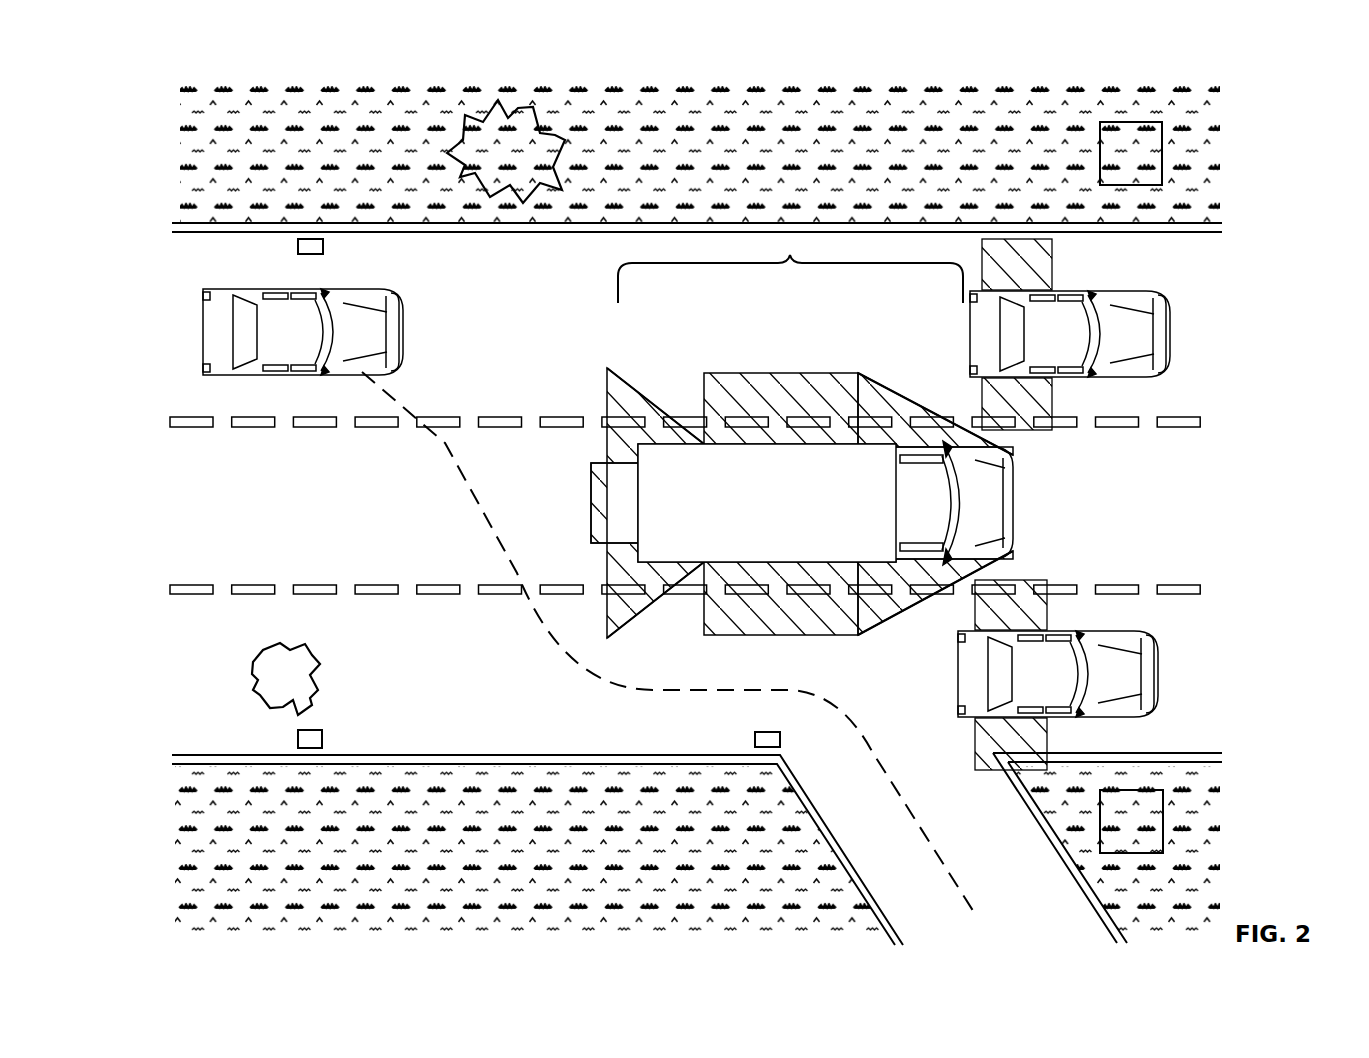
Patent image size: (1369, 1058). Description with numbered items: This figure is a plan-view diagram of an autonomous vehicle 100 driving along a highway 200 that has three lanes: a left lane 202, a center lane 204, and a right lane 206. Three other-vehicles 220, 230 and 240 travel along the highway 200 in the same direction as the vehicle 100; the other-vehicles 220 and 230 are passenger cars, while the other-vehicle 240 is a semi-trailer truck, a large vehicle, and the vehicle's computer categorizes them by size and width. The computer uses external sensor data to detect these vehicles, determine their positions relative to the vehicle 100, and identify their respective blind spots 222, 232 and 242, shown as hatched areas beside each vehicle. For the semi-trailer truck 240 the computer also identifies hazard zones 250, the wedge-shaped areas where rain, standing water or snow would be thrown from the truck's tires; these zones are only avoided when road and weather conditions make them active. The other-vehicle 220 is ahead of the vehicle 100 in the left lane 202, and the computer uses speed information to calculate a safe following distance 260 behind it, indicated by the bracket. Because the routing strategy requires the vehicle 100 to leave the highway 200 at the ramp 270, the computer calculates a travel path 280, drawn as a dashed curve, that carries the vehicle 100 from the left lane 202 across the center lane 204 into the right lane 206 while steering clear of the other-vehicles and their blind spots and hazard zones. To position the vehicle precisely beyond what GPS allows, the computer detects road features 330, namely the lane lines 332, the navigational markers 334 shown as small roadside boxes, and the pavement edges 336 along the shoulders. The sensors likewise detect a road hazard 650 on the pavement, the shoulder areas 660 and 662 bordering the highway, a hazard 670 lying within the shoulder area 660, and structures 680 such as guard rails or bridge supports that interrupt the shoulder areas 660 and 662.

The vehicle 100 is at (307, 344).
The highway 200 is at (1193, 527).
The left lane 202 is at (492, 342).
The center lane 204 is at (405, 511).
The right lane 206 is at (398, 671).
The other-vehicle 220 is at (1078, 346).
The blind spot 222 is at (1048, 268).
The other-vehicle 230 is at (1070, 686).
The blind spot 232 is at (1042, 610).
The other-vehicle 240 is at (793, 508).
The blind spot 242 is at (805, 380).
The hazard zones 250 is at (658, 408).
The safe following distance 260 is at (790, 252).
The ramp 270 is at (1027, 874).
The travel path 280 is at (543, 627).
The road features 330 is at (290, 246).
The lane lines 332 is at (323, 427).
The navigational markers 334 is at (322, 246).
The pavement edges 336 is at (443, 232).
The road hazard 650 is at (308, 652).
The shoulder area 660 is at (670, 97).
The shoulder area 662 is at (1202, 870).
The hazard 670 is at (483, 117).
The structures 680 is at (1152, 140).